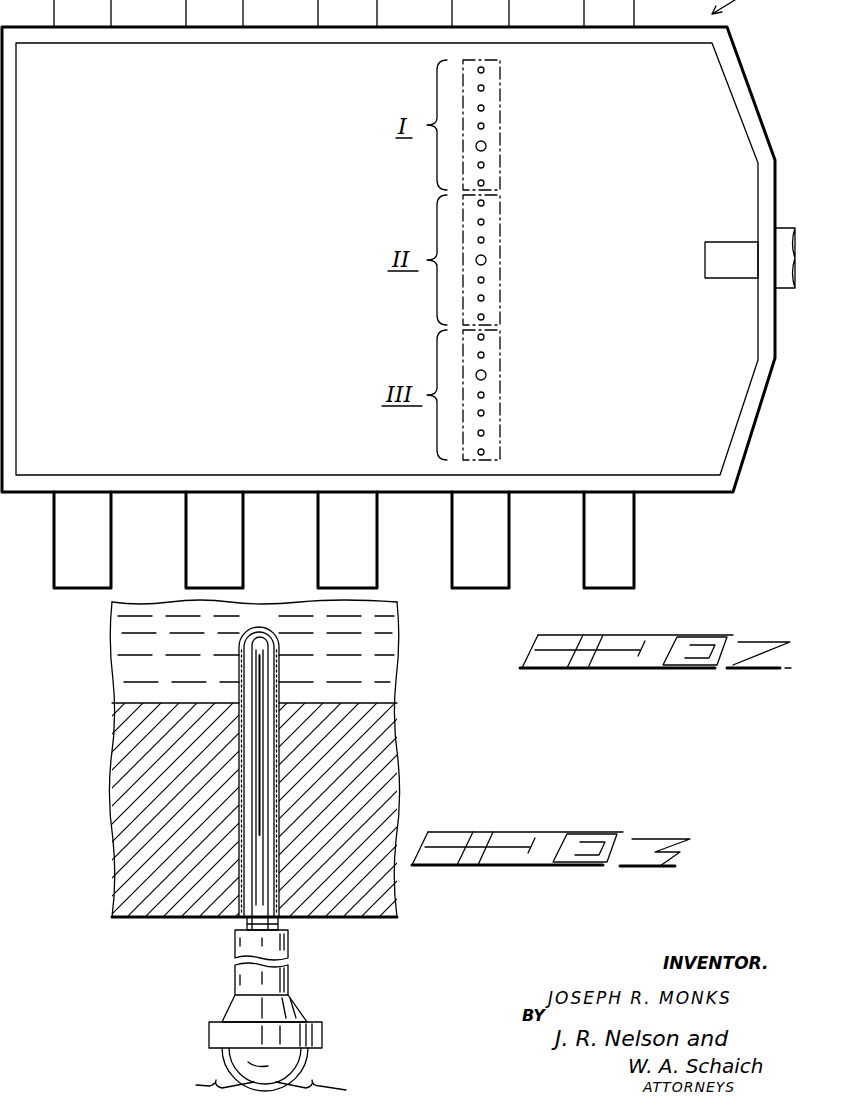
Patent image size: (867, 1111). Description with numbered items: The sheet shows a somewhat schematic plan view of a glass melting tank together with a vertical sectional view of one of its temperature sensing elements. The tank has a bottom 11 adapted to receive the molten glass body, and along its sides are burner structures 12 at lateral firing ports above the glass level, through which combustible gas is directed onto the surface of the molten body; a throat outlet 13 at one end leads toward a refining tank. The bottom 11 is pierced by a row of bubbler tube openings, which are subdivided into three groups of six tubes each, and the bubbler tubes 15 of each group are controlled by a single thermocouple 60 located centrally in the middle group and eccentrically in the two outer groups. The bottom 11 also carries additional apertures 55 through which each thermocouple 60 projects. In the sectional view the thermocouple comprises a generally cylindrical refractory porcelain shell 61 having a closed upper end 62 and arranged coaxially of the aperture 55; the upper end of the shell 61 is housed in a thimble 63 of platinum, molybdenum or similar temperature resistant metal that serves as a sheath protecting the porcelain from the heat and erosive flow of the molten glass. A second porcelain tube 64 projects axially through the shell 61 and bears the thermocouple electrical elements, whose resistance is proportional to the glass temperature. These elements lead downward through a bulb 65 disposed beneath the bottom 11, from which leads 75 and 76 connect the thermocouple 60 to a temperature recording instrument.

In FIG. 2, the bottom 11 is at (246, 256).
In FIG. 3, the bottom 11 is at (385, 757).
In FIG. 2, the burner structures 12 is at (224, 549).
In FIG. 2, the throat outlet 13 is at (738, 244).
In FIG. 2, the electrode probes 15 is at (484, 70).
In FIG. 2, the thermocouple 60 is at (486, 146).
In FIG. 3, the thermocouple 60 is at (230, 931).
In FIG. 3, the closed upper end 62 is at (260, 630).
In FIG. 3, the thimble 63 is at (240, 667).
In FIG. 3, the second porcelain tube 64 is at (258, 676).
In FIG. 3, the apertures 55 is at (276, 893).
In FIG. 3, the shell 61 is at (272, 908).
In FIG. 3, the bulb 65 is at (246, 1005).
In FIG. 3, the lead 75 is at (318, 1084).
In FIG. 3, the lead 76 is at (212, 1082).